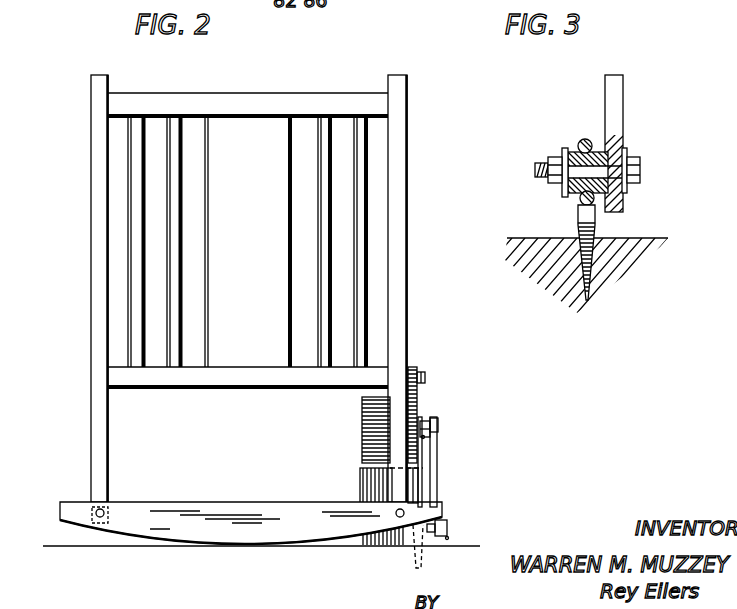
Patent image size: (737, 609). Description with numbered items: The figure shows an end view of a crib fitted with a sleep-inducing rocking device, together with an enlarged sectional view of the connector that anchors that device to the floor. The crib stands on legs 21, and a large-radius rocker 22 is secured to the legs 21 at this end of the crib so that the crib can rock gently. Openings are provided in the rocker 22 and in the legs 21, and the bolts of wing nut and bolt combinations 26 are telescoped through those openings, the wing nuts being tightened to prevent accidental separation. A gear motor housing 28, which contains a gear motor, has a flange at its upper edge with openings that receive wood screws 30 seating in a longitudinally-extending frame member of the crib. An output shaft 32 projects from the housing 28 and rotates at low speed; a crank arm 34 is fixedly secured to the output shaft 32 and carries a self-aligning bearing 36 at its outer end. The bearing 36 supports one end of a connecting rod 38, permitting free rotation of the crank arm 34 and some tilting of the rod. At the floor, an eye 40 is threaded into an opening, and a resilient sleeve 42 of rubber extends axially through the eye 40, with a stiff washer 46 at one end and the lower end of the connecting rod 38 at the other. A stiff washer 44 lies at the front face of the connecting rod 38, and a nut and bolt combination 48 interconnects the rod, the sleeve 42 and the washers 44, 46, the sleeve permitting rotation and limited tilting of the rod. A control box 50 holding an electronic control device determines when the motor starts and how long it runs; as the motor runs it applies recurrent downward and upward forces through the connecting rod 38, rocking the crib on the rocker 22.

In FIG. 2, the legs 21 is at (98, 405).
In FIG. 2, the rocker 22 is at (70, 508).
In FIG. 2, the wing nut and bolt combination 26 is at (102, 510).
In FIG. 2, the gear motor housing 28 is at (370, 432).
In FIG. 2, the wood screws 30 is at (418, 395).
In FIG. 2, the output shaft 32 is at (423, 437).
In FIG. 2, the crank arm 34 is at (425, 438).
In FIG. 2, the self-aligning bearing 36 is at (438, 423).
In FIG. 2, the connecting rod 38 is at (437, 475).
In FIG. 3, the connecting rod 38 is at (617, 90).
In FIG. 2, the eye 40 is at (447, 538).
In FIG. 3, the eye 40 is at (582, 200).
In FIG. 2, the resilient sleeve 42 is at (412, 540).
In FIG. 3, the resilient sleeve 42 is at (602, 152).
In FIG. 3, the stiff washer 44 is at (627, 157).
In FIG. 3, the stiff washer 46 is at (565, 193).
In FIG. 2, the nut and bolt combination 48 is at (447, 517).
In FIG. 3, the nut and bolt combination 48 is at (550, 160).
In FIG. 2, the control box 50 is at (365, 475).